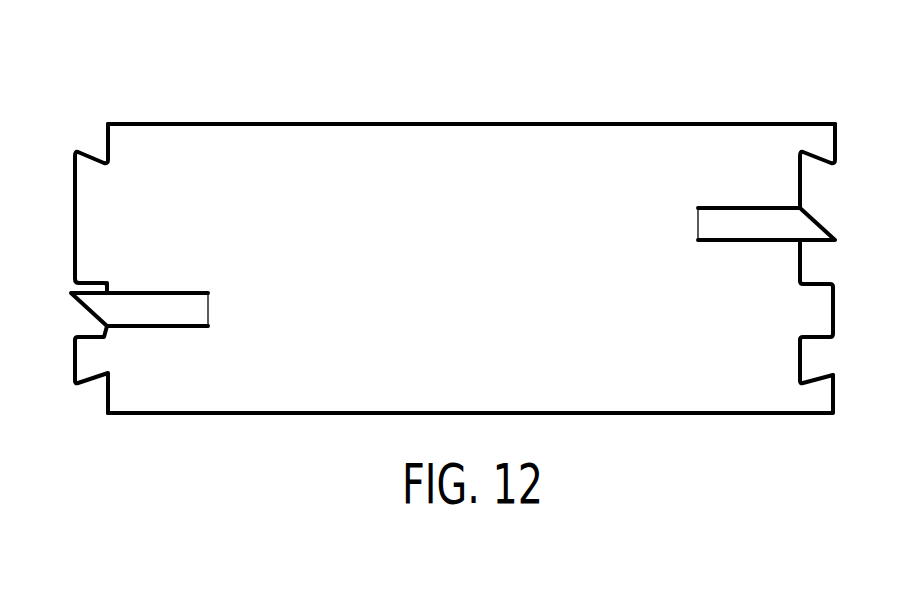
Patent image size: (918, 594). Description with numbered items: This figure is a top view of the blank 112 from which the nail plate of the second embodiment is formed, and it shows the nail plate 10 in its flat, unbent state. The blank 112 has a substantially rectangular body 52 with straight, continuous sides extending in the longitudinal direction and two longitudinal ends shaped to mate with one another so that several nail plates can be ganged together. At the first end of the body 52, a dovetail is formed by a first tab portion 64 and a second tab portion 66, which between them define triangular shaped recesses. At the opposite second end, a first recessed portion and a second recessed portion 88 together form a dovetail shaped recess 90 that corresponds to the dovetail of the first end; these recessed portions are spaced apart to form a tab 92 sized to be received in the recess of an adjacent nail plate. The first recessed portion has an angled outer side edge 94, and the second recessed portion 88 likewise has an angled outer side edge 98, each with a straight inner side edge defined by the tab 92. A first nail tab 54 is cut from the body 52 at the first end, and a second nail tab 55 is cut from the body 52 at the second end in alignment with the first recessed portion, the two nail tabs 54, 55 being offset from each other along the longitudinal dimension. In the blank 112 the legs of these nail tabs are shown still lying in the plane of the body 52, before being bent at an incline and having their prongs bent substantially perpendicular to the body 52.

The panel 10 is at (242, 101).
The blank 112 is at (460, 110).
The angled outer side edge 94 is at (797, 163).
The second nail tab 55 is at (735, 212).
The dovetail shaped recess 90 is at (811, 270).
The tab 92 is at (818, 317).
The second recessed portion 88 is at (816, 357).
The angled outer side edge 98 is at (795, 366).
The body 52 is at (337, 380).
The second tab portion 66 is at (90, 362).
The nail tab 54 is at (157, 297).
The first tab portion 64 is at (90, 190).